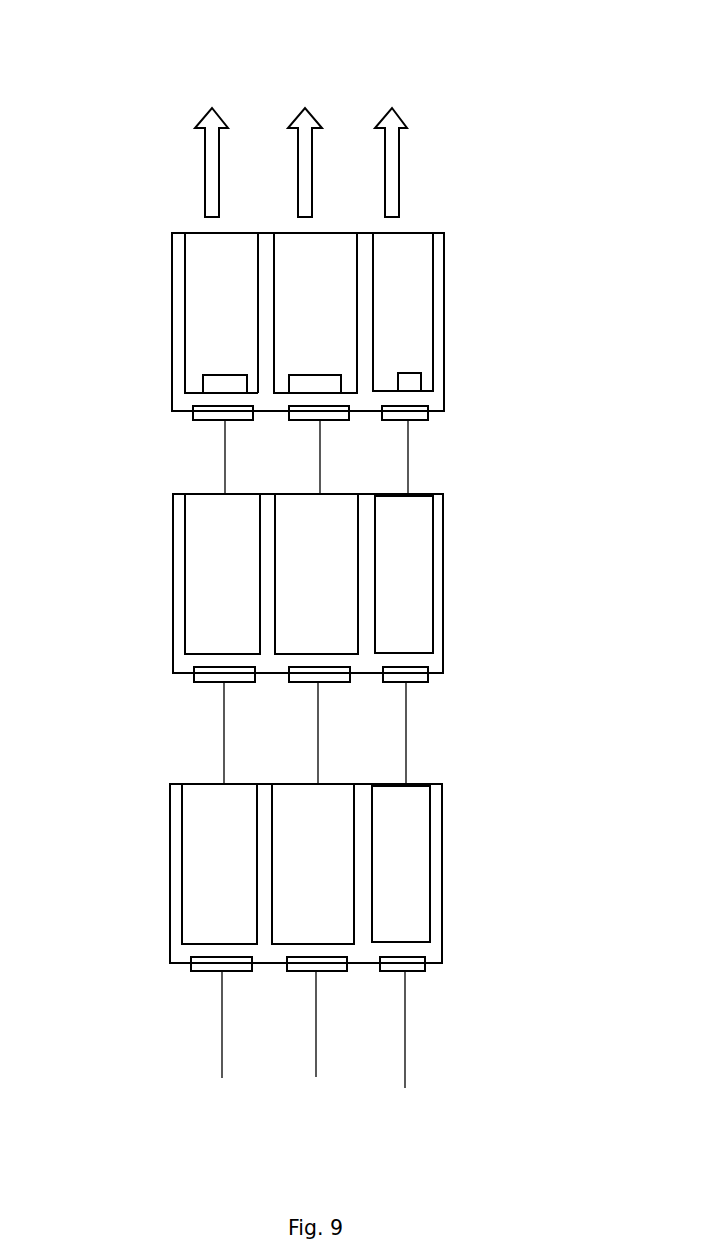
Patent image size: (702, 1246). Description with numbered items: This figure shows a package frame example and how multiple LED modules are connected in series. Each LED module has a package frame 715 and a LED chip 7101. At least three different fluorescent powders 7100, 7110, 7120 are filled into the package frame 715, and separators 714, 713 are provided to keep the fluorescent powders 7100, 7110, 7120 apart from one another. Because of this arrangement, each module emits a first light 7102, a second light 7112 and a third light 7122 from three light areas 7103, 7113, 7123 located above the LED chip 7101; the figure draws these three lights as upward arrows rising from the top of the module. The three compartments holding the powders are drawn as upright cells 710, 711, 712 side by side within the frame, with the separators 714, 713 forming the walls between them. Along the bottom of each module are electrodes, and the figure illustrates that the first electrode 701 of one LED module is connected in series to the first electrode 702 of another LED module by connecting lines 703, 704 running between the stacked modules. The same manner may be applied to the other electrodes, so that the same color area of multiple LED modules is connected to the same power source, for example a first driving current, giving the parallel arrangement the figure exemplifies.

The first electrode 701 is at (222, 413).
The first electrode 702 is at (218, 677).
The first connecting line 703 is at (225, 478).
The second connecting line 704 is at (323, 477).
The first cell 710 is at (162, 303).
The second cell 711 is at (410, 330).
The third cell 712 is at (471, 278).
The separator 713 is at (368, 315).
The separator 714 is at (268, 305).
The package frame 715 is at (182, 258).
The fluorescent powder 7100 is at (157, 303).
The LED chip 7101 is at (205, 387).
The first light 7102 is at (210, 112).
The first light area 7103 is at (197, 238).
The fluorescent powder 7110 is at (410, 364).
The second light 7112 is at (304, 112).
The second light area 7113 is at (293, 233).
The fluorescent powder 7120 is at (471, 312).
The third light 7122 is at (385, 110).
The third light area 7123 is at (438, 233).